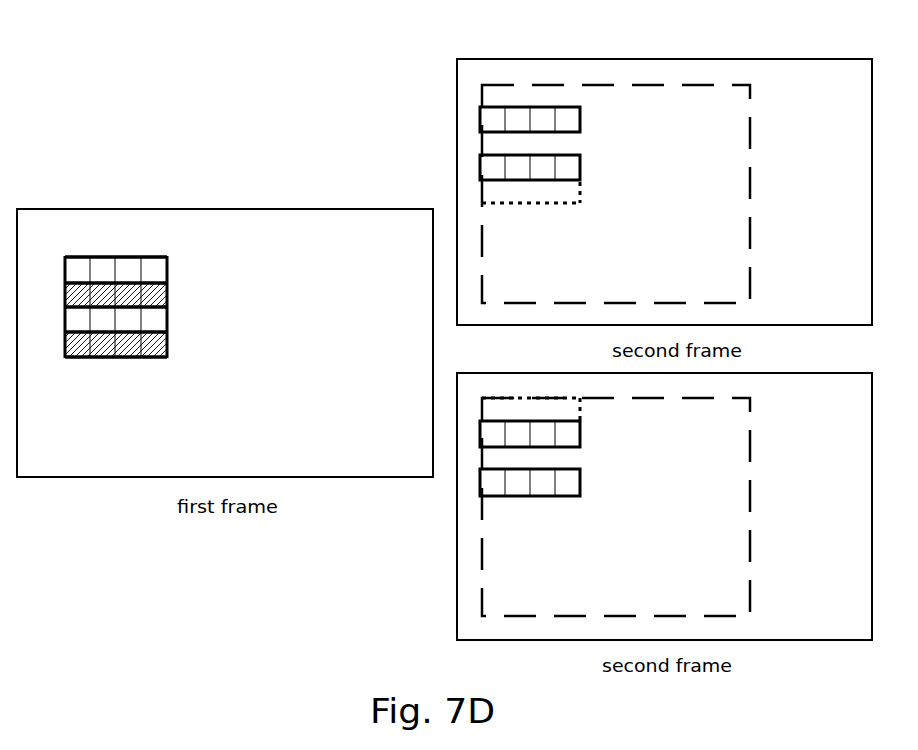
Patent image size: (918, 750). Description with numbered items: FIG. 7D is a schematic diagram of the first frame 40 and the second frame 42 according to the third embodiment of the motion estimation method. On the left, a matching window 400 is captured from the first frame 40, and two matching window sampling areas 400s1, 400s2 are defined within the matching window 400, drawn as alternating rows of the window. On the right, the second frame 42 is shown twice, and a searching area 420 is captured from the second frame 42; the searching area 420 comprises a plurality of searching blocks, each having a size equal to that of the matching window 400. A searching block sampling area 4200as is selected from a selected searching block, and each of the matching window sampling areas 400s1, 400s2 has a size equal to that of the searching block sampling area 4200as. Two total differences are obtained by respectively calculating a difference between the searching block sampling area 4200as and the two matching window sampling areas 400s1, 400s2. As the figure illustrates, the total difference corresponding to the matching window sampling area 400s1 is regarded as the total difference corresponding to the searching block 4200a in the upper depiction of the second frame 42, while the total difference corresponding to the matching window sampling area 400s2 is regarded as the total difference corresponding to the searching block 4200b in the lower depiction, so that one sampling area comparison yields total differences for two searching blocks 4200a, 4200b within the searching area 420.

The first frame 40 is at (283, 209).
The matching window 400 is at (155, 290).
The matching window sampling area 400s1 is at (168, 266).
The matching window sampling area 400s2 is at (168, 292).
The second frame 42 is at (772, 59).
The searching area 420 is at (750, 166).
The searching block sampling area 4200as is at (582, 122).
The searching block 4200a is at (584, 196).
The searching block 4200b is at (580, 410).